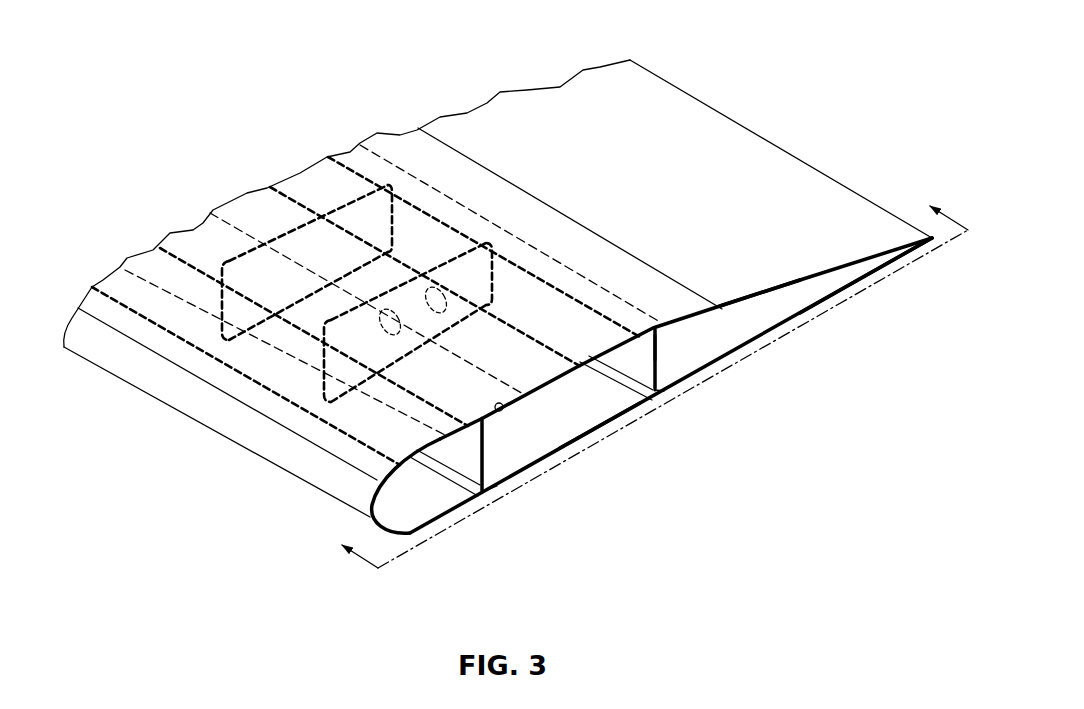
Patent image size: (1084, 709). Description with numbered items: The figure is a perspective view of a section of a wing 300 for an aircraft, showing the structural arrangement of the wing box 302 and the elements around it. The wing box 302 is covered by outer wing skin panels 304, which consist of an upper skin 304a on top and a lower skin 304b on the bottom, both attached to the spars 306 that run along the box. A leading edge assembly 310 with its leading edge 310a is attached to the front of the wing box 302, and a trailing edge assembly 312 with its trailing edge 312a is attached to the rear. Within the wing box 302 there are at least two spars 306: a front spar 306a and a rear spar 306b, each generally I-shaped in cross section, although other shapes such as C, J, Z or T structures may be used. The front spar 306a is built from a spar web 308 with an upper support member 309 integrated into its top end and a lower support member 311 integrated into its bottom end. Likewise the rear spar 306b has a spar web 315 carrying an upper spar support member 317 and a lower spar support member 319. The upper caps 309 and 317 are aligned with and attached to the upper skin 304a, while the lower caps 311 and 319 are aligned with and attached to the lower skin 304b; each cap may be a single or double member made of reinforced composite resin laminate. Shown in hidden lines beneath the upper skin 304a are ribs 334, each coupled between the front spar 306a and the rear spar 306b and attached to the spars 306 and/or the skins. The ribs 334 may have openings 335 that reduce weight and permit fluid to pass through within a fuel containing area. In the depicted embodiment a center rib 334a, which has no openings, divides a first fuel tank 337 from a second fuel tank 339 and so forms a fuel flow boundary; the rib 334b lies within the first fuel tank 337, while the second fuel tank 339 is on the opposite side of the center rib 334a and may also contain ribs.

The wing 300 is at (240, 117).
The wing box 302 is at (603, 428).
The outer wing skin panels 304 is at (673, 128).
The upper skin 304a is at (777, 280).
The lower skin 304b is at (786, 323).
The spars 306 is at (497, 447).
The front spar 306a is at (497, 470).
The rear spar 306b is at (663, 377).
The spar web 308 is at (573, 432).
The upper support member 309 is at (496, 402).
The leading edge assembly 310 is at (393, 547).
The leading edge 310a is at (233, 447).
The lower support member 311 is at (478, 500).
The trailing edge assembly 312 is at (838, 310).
The trailing edge 312a is at (728, 117).
The spar web 315 is at (662, 347).
The upper spar support member 317 is at (658, 326).
The lower spar support member 319 is at (652, 395).
The ribs 334 is at (338, 203).
The center rib 334a is at (210, 213).
The rib 334b is at (323, 370).
The openings 335 is at (390, 340).
The first fuel tank 337 is at (413, 240).
The second fuel tank 339 is at (243, 193).